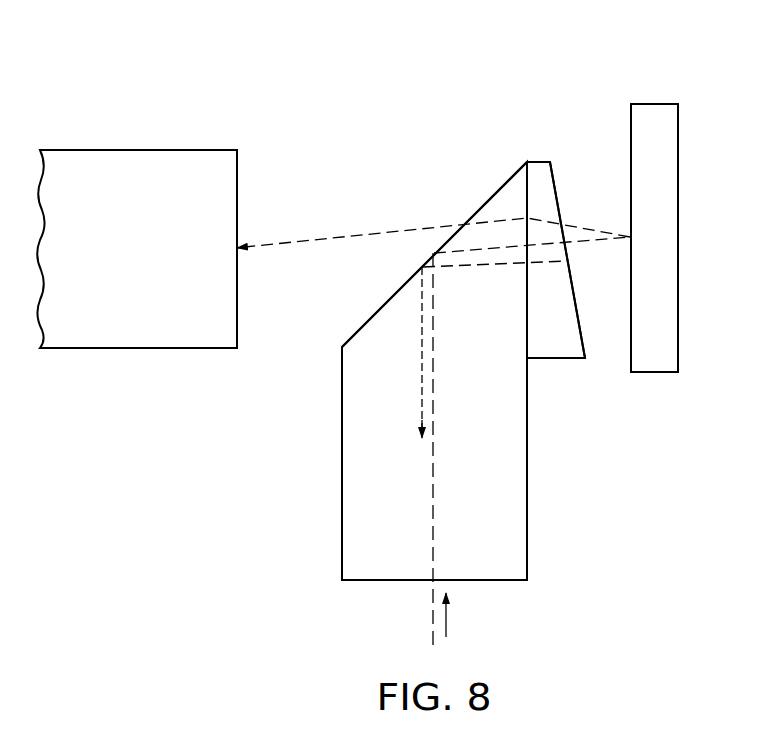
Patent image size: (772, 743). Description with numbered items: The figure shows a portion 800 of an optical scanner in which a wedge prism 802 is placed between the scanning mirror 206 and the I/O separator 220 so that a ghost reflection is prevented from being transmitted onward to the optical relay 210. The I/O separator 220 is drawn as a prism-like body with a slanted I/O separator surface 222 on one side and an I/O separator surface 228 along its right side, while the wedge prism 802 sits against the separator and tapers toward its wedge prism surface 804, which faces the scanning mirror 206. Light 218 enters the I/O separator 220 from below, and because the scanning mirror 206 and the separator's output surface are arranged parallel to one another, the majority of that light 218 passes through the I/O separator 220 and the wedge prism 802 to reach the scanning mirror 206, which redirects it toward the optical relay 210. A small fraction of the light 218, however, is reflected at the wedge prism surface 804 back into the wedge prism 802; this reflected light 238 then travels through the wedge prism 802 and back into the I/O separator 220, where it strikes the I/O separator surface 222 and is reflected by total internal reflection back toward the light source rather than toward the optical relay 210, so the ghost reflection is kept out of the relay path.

The portion of the optical scanner 800 is at (226, 106).
The optical relay 210 is at (160, 265).
The scanning mirror 206 is at (679, 228).
The I/O separator 220 is at (342, 462).
The I/O separator surface 222 is at (492, 195).
The I/O separator surface 228 is at (530, 512).
The wedge prism 802 is at (556, 362).
The wedge prism surface 804 is at (558, 191).
The reflected light 238 is at (421, 362).
The light 218 is at (432, 615).